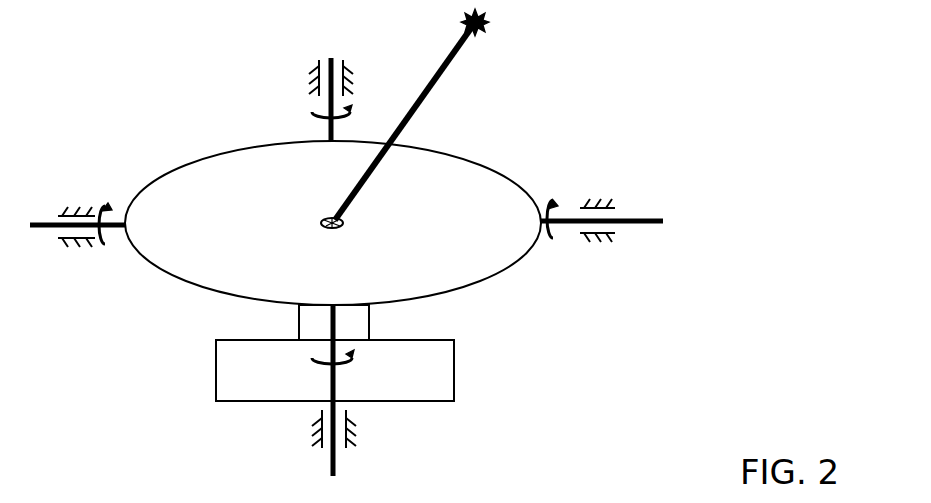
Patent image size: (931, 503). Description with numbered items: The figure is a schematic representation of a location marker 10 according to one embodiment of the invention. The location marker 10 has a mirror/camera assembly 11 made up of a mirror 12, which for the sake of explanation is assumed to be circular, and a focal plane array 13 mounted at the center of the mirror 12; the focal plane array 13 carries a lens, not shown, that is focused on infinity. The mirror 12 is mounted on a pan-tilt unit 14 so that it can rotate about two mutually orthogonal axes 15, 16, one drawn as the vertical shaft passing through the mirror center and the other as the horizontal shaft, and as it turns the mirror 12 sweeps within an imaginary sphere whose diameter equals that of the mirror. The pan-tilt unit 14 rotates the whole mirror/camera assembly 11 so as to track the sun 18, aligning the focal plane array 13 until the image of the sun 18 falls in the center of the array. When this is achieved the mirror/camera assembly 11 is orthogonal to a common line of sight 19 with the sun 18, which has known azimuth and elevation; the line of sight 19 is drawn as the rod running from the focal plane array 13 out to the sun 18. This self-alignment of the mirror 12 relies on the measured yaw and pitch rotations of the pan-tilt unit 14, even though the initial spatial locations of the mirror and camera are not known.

The location marker 10 is at (562, 337).
The mirror/camera assembly 11 is at (205, 114).
The mirror 12 is at (490, 186).
The focal plane array (FPA) 13 is at (343, 226).
The pan-tilt unit 14 is at (442, 367).
The first axis 15 is at (337, 462).
The second axis 16 is at (643, 218).
The sun 18 is at (484, 23).
The common line of sight 19 is at (430, 108).